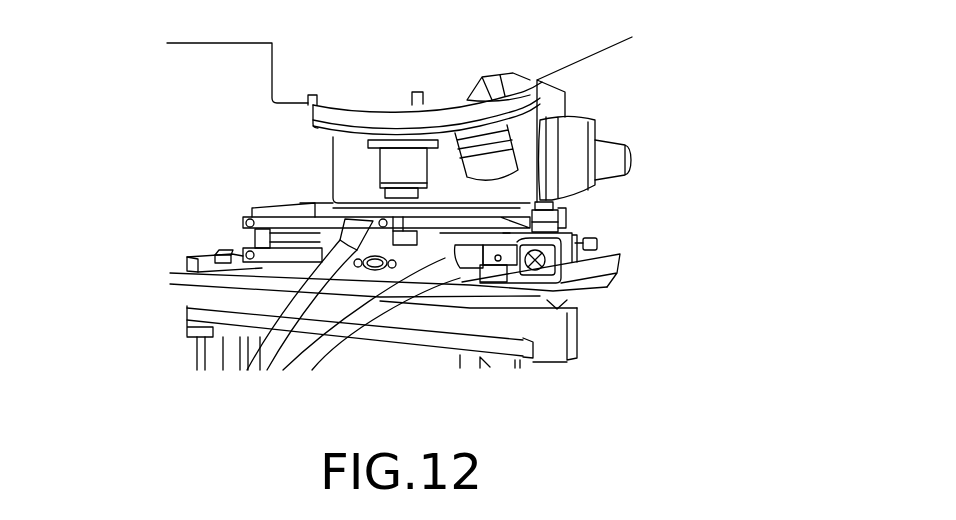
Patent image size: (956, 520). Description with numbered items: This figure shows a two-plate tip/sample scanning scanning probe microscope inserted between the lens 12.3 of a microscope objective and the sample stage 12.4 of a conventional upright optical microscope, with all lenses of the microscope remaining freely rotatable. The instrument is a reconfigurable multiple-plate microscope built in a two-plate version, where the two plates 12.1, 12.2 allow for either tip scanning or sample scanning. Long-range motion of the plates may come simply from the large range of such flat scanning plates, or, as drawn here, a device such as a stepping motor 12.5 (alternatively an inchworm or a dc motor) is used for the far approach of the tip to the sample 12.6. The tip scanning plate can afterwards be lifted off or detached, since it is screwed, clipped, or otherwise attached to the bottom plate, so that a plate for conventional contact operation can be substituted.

The plate 12.1 is at (545, 207).
The plate 12.2 is at (267, 263).
The lens 12.3 is at (382, 165).
The sample stage 12.4 is at (590, 304).
The stepping motor 12.5 is at (566, 272).
The sample 12.6 is at (597, 240).